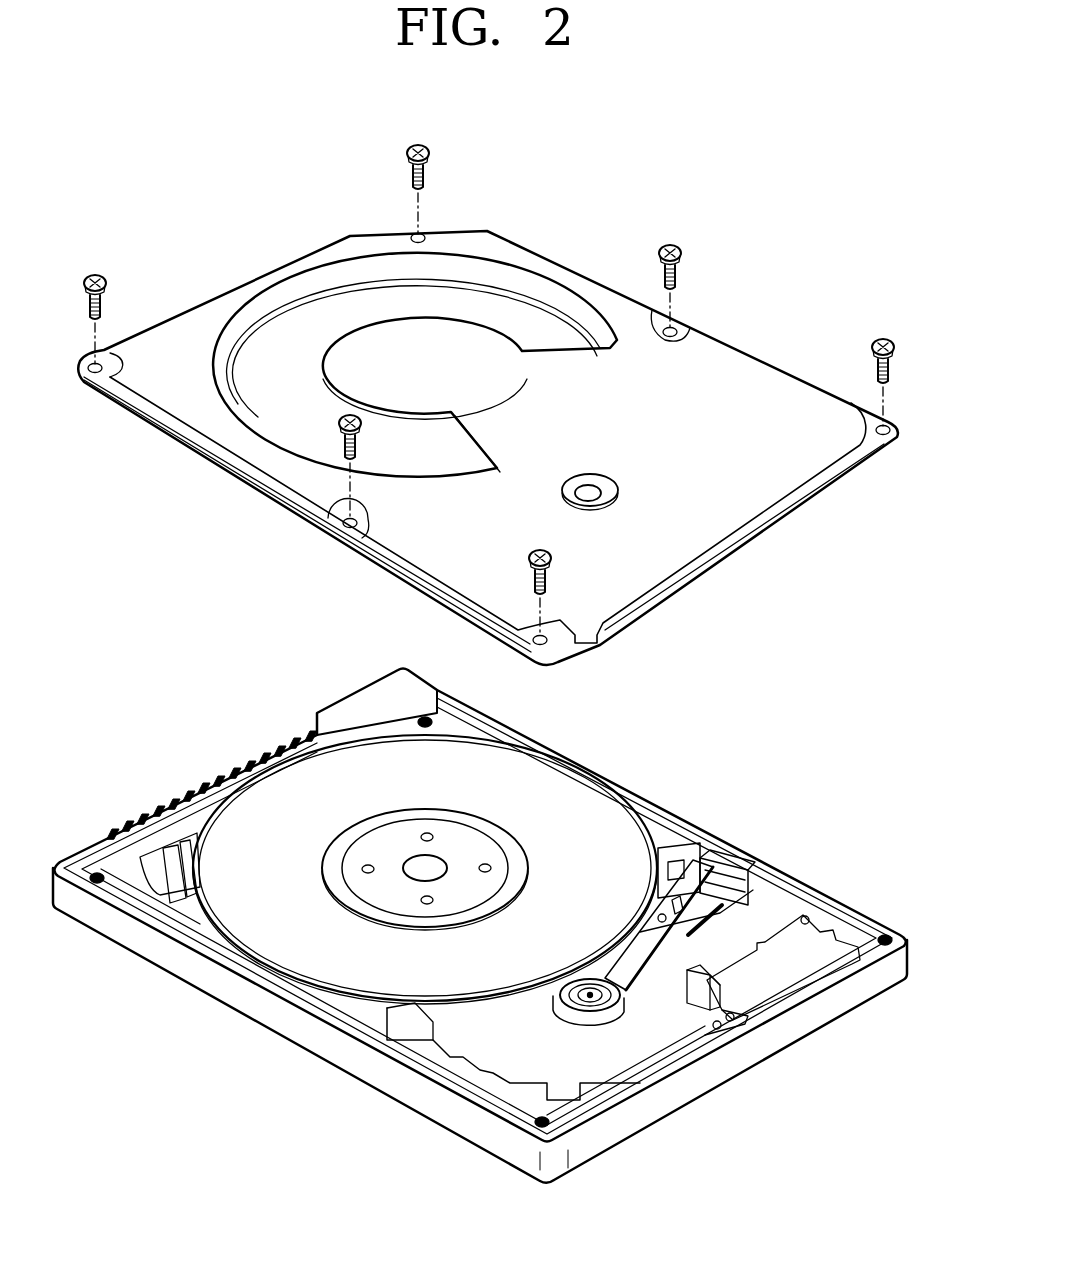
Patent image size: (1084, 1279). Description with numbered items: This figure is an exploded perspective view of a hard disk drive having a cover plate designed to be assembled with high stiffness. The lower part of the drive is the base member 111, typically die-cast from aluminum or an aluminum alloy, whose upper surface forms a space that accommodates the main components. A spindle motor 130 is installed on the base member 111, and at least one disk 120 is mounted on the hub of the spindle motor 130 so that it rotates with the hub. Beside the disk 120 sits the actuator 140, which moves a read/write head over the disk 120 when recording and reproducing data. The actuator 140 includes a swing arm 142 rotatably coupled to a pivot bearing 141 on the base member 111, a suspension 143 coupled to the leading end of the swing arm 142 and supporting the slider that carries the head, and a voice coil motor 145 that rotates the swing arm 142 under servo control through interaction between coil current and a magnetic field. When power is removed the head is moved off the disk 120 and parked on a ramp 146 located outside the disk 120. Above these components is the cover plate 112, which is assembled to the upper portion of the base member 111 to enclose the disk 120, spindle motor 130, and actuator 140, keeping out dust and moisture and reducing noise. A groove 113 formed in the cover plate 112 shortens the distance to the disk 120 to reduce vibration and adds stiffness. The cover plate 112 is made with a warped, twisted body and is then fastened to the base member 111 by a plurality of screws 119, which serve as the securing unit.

The base member 111 is at (833, 1018).
The cover plate 112 is at (770, 400).
The groove 113 is at (283, 325).
The screws 119 is at (430, 156).
The disk 120 is at (262, 800).
The spindle motor 130 is at (388, 840).
The actuator 140 is at (686, 884).
The pivot bearing 141 is at (590, 995).
The swing arm 142 is at (623, 953).
The suspension 143 is at (697, 847).
The voice coil motor 145 is at (597, 1103).
The ramp 146 is at (718, 867).